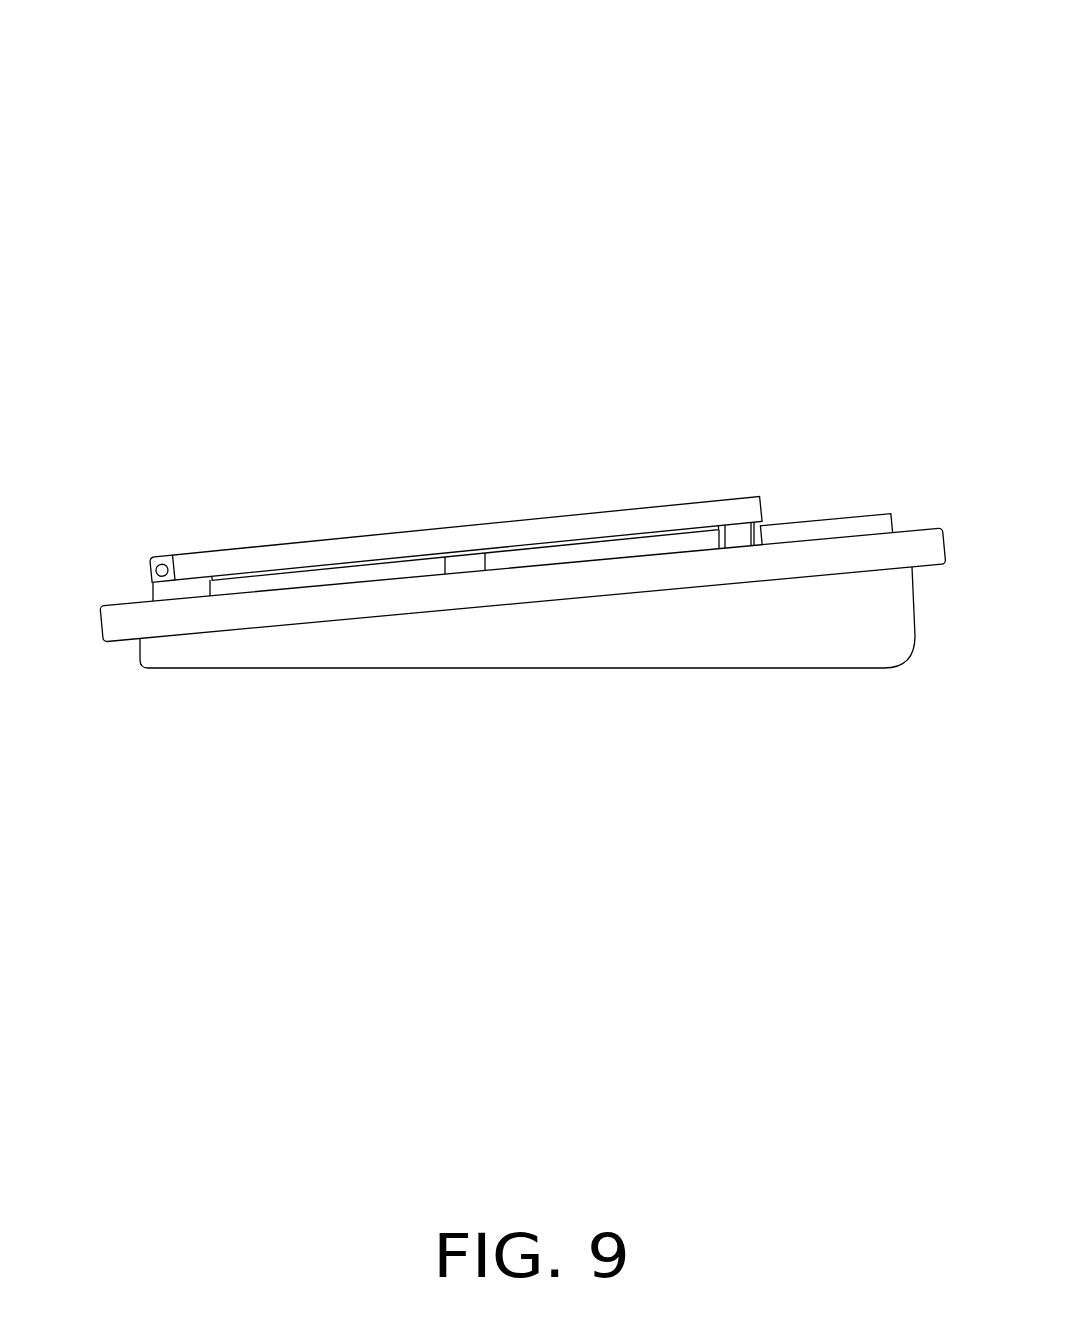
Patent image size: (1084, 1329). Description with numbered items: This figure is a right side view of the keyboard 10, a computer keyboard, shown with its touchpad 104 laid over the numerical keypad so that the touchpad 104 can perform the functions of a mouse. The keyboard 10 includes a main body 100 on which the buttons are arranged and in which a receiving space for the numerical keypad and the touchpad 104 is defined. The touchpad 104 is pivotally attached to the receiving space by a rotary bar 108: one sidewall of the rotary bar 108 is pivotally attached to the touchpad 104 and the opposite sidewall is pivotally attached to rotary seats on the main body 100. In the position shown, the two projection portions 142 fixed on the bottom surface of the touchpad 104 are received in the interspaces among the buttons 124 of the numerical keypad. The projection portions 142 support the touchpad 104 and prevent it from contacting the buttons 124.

The keyboard 10 is at (330, 97).
The main body 100 is at (928, 547).
The touchpad 104 is at (479, 537).
The rotary bar 108 is at (168, 592).
The buttons 124 is at (542, 555).
The projection portions 142 is at (742, 540).